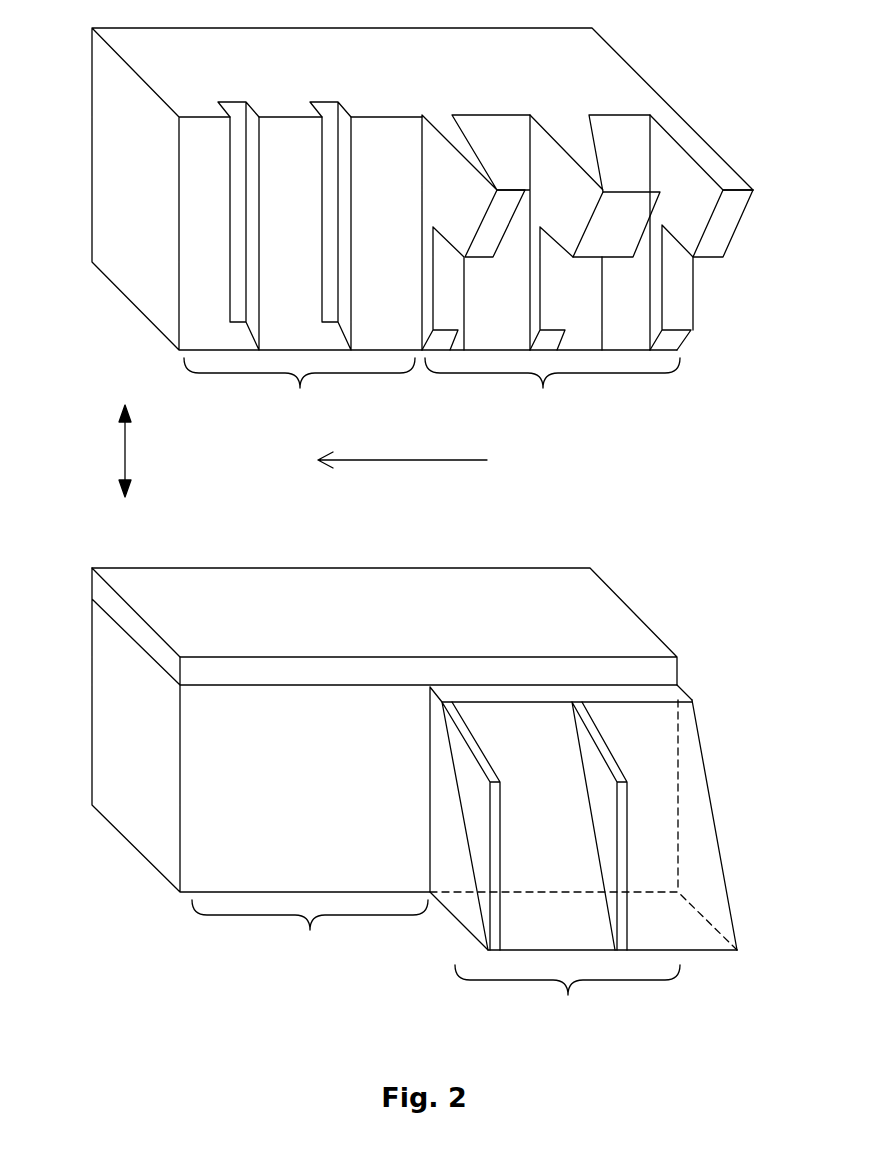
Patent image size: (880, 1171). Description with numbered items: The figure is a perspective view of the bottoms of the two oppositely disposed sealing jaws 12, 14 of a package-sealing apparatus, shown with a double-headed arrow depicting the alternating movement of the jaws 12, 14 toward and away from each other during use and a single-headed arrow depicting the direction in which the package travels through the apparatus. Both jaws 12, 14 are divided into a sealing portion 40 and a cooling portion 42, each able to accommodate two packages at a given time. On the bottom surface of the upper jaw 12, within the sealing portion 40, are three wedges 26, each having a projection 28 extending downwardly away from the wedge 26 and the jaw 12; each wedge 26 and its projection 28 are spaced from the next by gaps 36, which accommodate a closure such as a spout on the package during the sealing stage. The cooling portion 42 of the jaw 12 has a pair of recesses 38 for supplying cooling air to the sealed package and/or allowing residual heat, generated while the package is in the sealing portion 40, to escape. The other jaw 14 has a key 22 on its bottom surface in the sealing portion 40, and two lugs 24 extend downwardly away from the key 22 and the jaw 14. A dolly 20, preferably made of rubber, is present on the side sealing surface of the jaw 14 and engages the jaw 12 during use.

The sealing jaw 12 is at (107, 132).
The sealing jaw 14 is at (108, 702).
The dolly 20 is at (610, 603).
The key 22 is at (702, 815).
The lugs 24 is at (600, 813).
The wedges 26 is at (558, 285).
The projection 28 is at (618, 178).
The gaps 36 is at (512, 137).
The recesses 38 is at (330, 125).
The sealing portion 40 is at (552, 695).
The cooling portion 42 is at (306, 658).